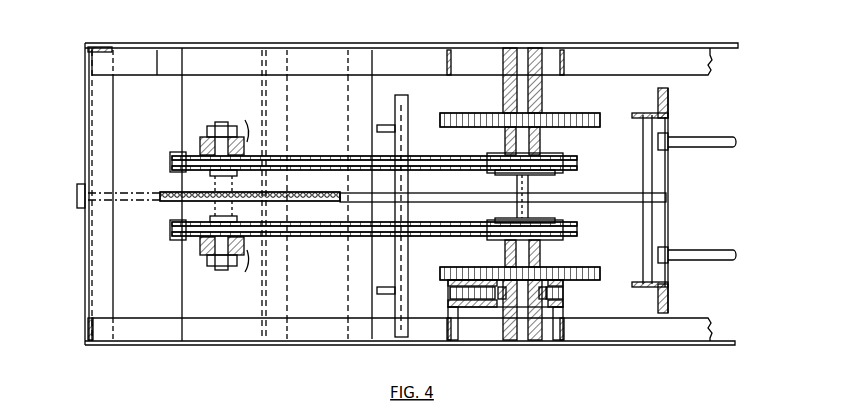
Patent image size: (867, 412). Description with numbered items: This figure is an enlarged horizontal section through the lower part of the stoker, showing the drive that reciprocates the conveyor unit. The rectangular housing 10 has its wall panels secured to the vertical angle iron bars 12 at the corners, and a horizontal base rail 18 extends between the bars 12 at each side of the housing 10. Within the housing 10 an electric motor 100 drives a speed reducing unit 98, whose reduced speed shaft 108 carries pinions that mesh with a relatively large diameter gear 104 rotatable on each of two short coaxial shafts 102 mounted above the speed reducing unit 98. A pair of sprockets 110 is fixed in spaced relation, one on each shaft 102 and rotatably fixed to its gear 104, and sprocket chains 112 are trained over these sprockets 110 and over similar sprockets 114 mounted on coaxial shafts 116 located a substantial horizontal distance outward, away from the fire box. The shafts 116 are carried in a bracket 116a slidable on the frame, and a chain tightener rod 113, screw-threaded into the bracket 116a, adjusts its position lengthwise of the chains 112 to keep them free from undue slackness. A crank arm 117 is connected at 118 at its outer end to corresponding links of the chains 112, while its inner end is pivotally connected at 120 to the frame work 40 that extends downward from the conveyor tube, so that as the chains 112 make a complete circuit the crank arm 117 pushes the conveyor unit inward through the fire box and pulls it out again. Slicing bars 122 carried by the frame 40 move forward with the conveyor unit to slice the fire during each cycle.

The housing 10 is at (726, 43).
The vertical angle iron bar 12 is at (100, 47).
The horizontal base rail 18 is at (649, 62).
The frame work 40 is at (670, 100).
The speed reducing unit 98 is at (548, 305).
The electric motor 100 is at (260, 194).
The short coaxial shaft 102 is at (522, 61).
The gear 104 is at (593, 113).
The reduced speed shaft 108 is at (525, 211).
The sprocket 110 is at (490, 172).
The sprocket chain 112 is at (413, 149).
The chain tightener rod 113 is at (144, 198).
The sprocket 114 is at (170, 152).
The shaft 116 is at (222, 122).
The bracket 116a is at (248, 120).
The crank arm 117 is at (622, 192).
The connection 118 is at (170, 174).
The pivotal connection 120 is at (650, 178).
The slicing bar 122 is at (704, 137).